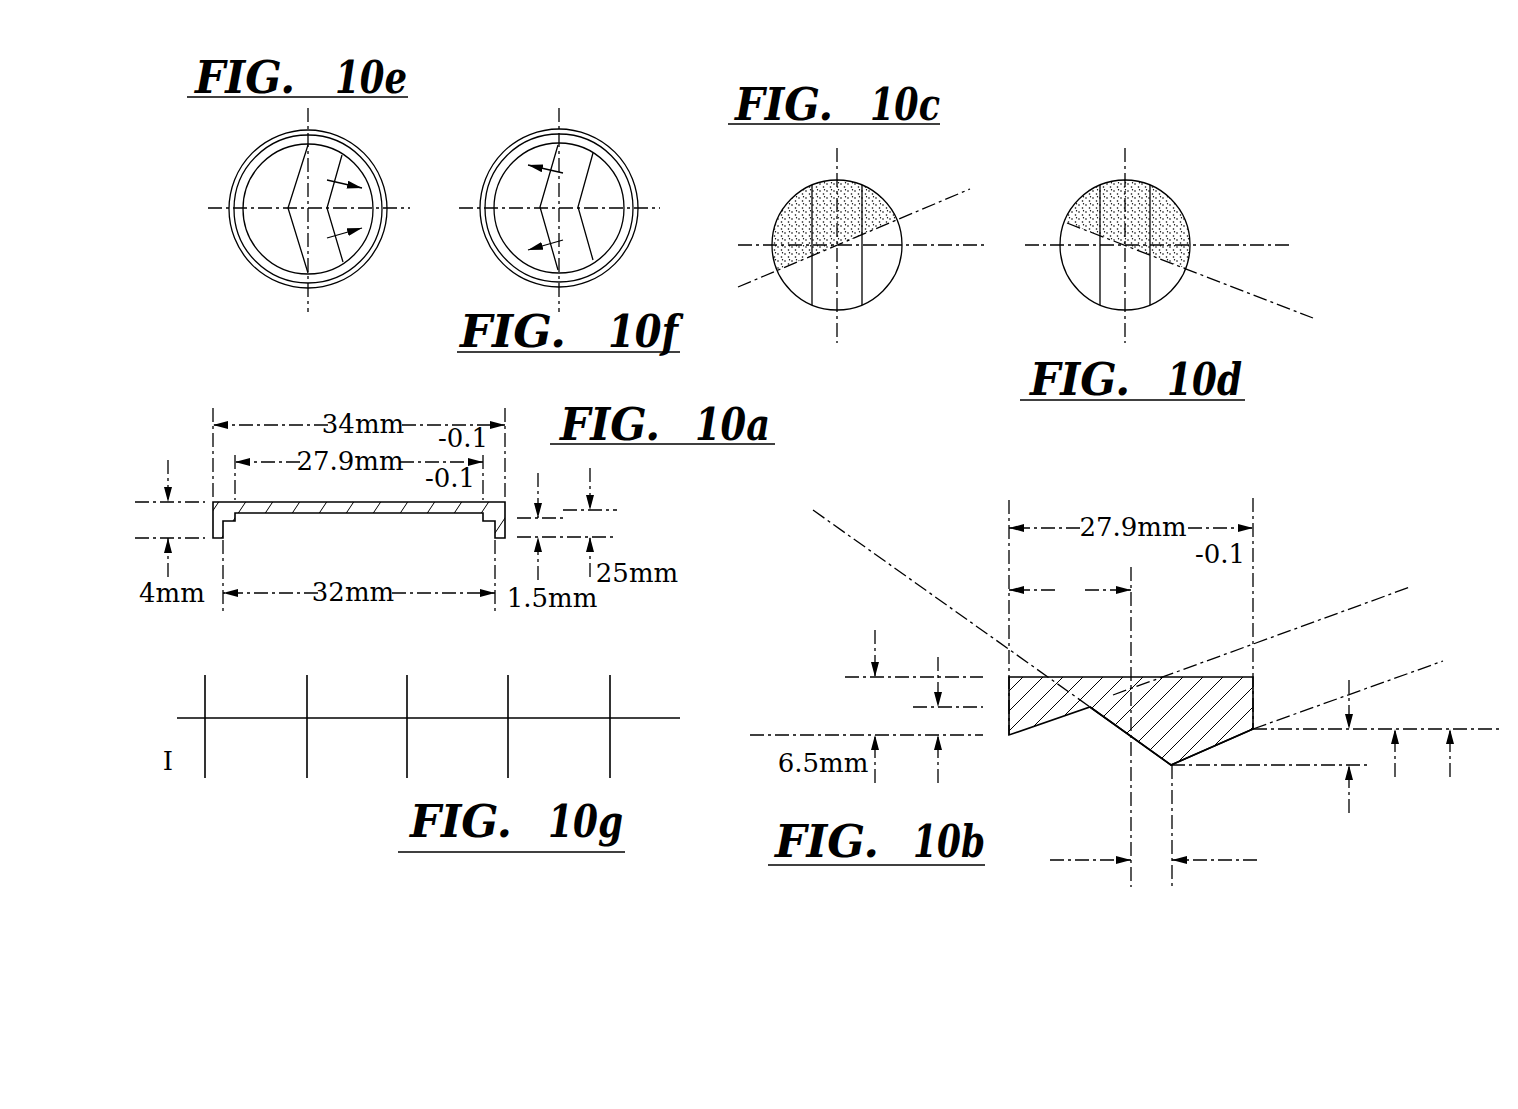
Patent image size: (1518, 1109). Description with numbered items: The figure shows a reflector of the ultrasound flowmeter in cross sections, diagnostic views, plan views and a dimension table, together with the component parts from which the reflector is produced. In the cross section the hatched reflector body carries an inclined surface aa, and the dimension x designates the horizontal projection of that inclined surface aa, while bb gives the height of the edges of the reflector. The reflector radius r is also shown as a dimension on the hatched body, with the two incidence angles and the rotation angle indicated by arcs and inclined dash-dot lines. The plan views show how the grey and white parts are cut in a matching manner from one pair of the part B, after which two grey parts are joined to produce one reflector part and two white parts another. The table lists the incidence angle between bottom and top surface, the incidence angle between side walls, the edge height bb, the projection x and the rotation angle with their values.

In FIG. 10B, the inclined surface aa is at (1147, 753).
In FIG. 10G, the height of the edges bb is at (460, 727).
In FIG. 10B, the height of the edges bb is at (1136, 735).
In FIG. 10B, the part B is at (934, 528).
In FIG. 10G, the horizontal projection of the inclined surface x is at (562, 727).
In FIG. 10B, the horizontal projection of the inclined surface x is at (1153, 859).
In FIG. 10B, the reflector radius r is at (1070, 589).